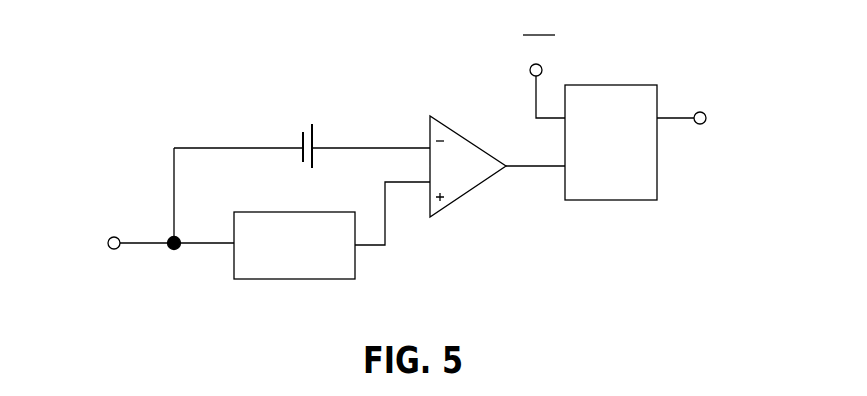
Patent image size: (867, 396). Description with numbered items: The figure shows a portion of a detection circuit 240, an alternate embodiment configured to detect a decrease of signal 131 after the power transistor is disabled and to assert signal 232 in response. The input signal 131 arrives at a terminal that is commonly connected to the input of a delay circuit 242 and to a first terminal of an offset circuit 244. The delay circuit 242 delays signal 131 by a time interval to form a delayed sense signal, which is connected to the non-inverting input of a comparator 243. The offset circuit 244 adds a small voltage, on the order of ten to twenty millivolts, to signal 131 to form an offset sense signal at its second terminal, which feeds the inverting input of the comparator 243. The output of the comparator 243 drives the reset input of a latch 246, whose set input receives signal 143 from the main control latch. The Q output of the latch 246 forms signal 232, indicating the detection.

The detection circuit 240 is at (93, 87).
The signal 131 is at (117, 249).
The offset circuit 244 is at (303, 136).
The delay circuit 242 is at (265, 280).
The comparator 243 is at (459, 134).
The signal 143 is at (542, 69).
The latch 246 is at (657, 190).
The signal 232 is at (706, 122).